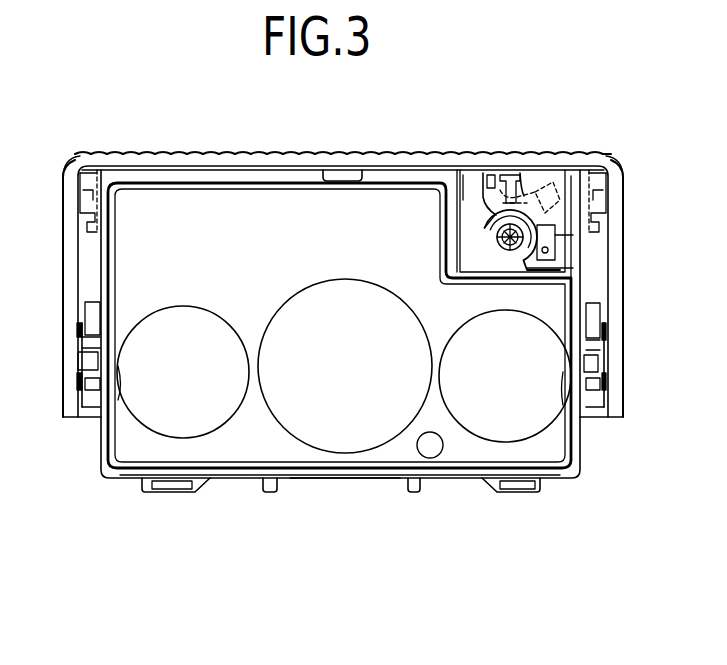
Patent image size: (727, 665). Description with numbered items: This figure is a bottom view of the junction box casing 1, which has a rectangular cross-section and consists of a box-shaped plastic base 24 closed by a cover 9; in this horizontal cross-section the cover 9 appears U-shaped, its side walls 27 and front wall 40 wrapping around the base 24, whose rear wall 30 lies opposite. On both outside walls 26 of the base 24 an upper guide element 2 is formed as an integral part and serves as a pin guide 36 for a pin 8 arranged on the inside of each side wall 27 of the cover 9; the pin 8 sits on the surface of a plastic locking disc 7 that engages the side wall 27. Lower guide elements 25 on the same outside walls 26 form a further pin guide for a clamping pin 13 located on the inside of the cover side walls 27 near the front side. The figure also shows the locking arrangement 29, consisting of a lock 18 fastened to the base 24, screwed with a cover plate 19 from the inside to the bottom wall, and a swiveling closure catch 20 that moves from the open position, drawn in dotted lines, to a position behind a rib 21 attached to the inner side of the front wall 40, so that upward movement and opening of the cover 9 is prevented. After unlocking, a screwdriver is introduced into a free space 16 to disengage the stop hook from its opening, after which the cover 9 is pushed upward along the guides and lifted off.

The junction box casing 1 is at (469, 500).
The upper guide element 2 is at (92, 308).
The locking disc 7 is at (82, 347).
The pin 8 is at (92, 365).
The cover 9 is at (171, 155).
The clamping pin 13 is at (82, 205).
The free space 16 is at (338, 172).
The lock 18 is at (551, 238).
The cover plate 19 is at (468, 183).
The closure catch 20 is at (527, 185).
The rib 21 is at (510, 174).
The base 24 is at (355, 478).
The lower guide element 25 is at (72, 172).
The outside wall 26 is at (108, 260).
The side wall 27 is at (64, 419).
The locking arrangement 29 is at (571, 181).
The rear wall 30 is at (228, 478).
The pin guide 36 is at (92, 366).
The front wall 40 is at (484, 174).